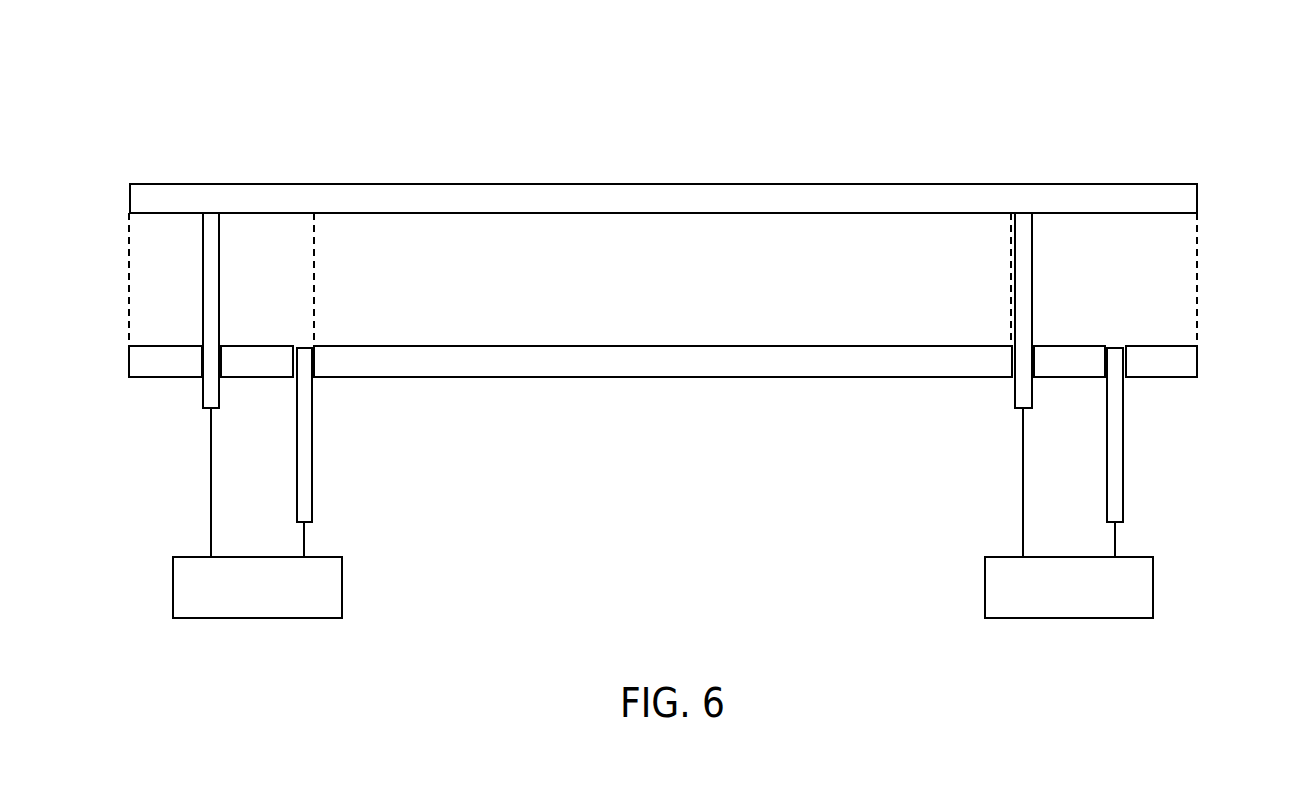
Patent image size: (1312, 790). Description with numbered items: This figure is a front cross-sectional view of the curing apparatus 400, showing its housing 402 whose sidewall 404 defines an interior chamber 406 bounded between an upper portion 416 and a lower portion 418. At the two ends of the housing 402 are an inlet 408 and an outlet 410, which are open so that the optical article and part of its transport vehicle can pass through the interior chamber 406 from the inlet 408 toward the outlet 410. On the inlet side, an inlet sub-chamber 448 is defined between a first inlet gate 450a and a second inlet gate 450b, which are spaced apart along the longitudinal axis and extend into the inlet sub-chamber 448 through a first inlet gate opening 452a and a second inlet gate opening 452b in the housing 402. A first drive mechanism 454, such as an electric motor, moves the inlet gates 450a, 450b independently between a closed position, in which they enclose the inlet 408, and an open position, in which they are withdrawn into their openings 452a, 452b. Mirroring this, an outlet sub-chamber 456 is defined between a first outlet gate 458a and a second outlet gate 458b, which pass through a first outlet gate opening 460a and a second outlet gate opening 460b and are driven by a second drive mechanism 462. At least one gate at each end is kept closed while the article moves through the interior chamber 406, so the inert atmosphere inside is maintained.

The curing apparatus 400 is at (851, 103).
The housing 402 is at (1130, 180).
The sidewall 404 is at (1019, 194).
The interior chamber 406 is at (686, 295).
The inlet 408 is at (1207, 244).
The outlet 410 is at (123, 236).
The upper portion 416 is at (303, 182).
The lower portion 418 is at (431, 382).
The inlet sub-chamber 448 is at (1177, 285).
The first inlet gate 450a is at (1116, 449).
The second inlet gate 450b is at (1023, 265).
The first inlet gate opening 452a is at (1114, 344).
The second inlet gate opening 452b is at (1032, 343).
The first drive mechanism 454 is at (1140, 590).
The outlet sub-chamber 456 is at (148, 304).
The first outlet gate 458a is at (304, 451).
The second outlet gate 458b is at (213, 265).
The first outlet gate opening 460a is at (302, 343).
The second outlet gate opening 460b is at (220, 343).
The second drive mechanism 462 is at (330, 585).